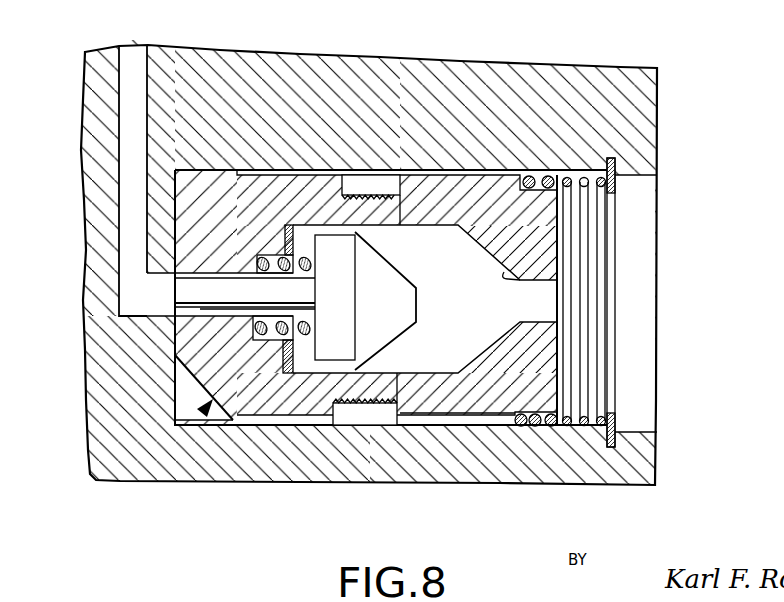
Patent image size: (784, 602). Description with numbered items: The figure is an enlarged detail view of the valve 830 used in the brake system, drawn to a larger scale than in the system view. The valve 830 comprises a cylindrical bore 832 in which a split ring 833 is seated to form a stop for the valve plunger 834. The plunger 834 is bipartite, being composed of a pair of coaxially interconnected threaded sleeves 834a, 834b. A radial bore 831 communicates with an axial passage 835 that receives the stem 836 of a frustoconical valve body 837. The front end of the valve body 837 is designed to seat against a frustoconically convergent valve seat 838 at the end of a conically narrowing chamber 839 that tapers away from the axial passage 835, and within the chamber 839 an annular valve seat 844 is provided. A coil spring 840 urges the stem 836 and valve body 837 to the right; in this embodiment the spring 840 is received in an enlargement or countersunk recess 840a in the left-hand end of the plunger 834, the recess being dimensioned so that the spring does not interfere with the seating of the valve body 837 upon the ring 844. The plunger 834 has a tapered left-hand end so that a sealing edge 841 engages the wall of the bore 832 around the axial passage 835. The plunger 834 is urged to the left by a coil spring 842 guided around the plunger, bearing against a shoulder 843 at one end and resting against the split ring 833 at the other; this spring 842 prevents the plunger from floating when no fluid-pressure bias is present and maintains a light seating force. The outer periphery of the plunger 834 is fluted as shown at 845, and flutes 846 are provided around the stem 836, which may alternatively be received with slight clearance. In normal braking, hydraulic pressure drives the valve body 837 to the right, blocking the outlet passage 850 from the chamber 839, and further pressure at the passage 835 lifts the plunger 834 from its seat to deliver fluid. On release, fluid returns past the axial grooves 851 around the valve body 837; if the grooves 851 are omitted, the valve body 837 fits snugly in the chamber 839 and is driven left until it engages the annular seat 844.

The valve 830 is at (193, 420).
The radial bore 831 is at (133, 57).
The cylindrical bore 832 is at (640, 428).
The split ring 833 is at (613, 218).
The valve plunger 834 is at (449, 409).
The threaded sleeve 834a is at (250, 402).
The threaded sleeve 834b is at (500, 410).
The axial passage 835 is at (147, 277).
The stem 836 is at (202, 296).
The frustoconical valve body 837 is at (382, 337).
The frustoconically convergent valve seat 838 is at (517, 278).
The conically narrowing chamber 839 is at (432, 238).
The coil spring 840 is at (307, 332).
The countersunk recess 840a is at (267, 255).
The sealing edge 841 is at (173, 348).
The coil spring 842 is at (587, 377).
The shoulder 843 is at (540, 170).
The annular valve seat 844 is at (293, 247).
The flutes 845 is at (398, 177).
The flutes 846 is at (203, 277).
The outlet passage 850 is at (562, 312).
The axial grooves 851 is at (341, 222).